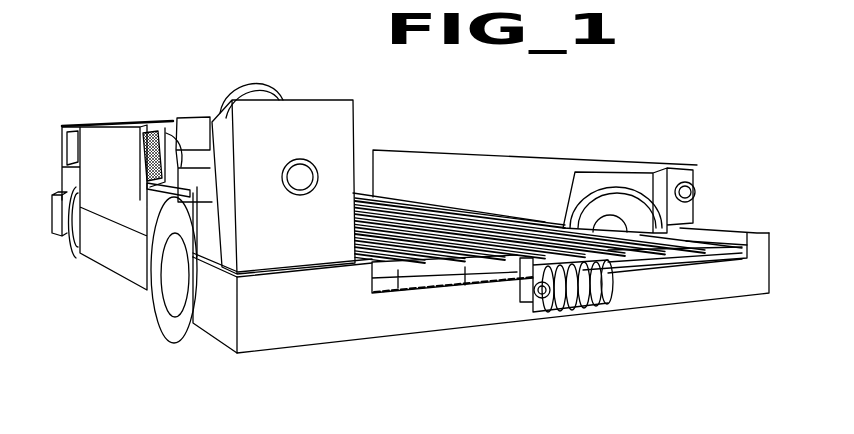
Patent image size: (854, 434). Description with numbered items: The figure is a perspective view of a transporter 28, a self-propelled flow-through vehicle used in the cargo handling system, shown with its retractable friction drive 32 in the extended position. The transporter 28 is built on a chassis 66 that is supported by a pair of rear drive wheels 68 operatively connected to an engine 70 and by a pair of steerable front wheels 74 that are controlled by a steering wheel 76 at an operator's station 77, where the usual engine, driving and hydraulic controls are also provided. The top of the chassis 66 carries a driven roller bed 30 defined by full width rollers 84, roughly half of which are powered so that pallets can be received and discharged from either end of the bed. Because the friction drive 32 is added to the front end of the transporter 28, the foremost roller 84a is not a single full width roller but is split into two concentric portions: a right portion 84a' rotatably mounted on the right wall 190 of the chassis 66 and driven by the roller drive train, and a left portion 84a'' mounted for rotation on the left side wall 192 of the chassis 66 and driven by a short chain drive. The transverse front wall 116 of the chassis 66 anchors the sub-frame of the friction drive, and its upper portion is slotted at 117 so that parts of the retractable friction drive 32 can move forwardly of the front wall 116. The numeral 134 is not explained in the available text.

The transporter 28 is at (628, 119).
The driven roller bed 30 is at (480, 197).
The retractable friction drive 32 is at (590, 303).
The chassis 66 is at (294, 349).
The rear drive wheels 68 is at (72, 252).
The engine 70 is at (98, 152).
The steerable front wheels 74 is at (168, 326).
The steering wheel 76 is at (276, 77).
The operator's station 77 is at (192, 108).
The full width rollers 84 is at (445, 227).
The split front roller 84a is at (452, 285).
The right roller portion 84a' is at (467, 289).
The left roller portion 84a'' is at (675, 267).
The transverse front wall 116 is at (655, 292).
The slot 117 is at (540, 307).
The drive roller grooves 134 is at (576, 308).
The right wall 190 is at (212, 327).
The left side wall 192 is at (740, 230).